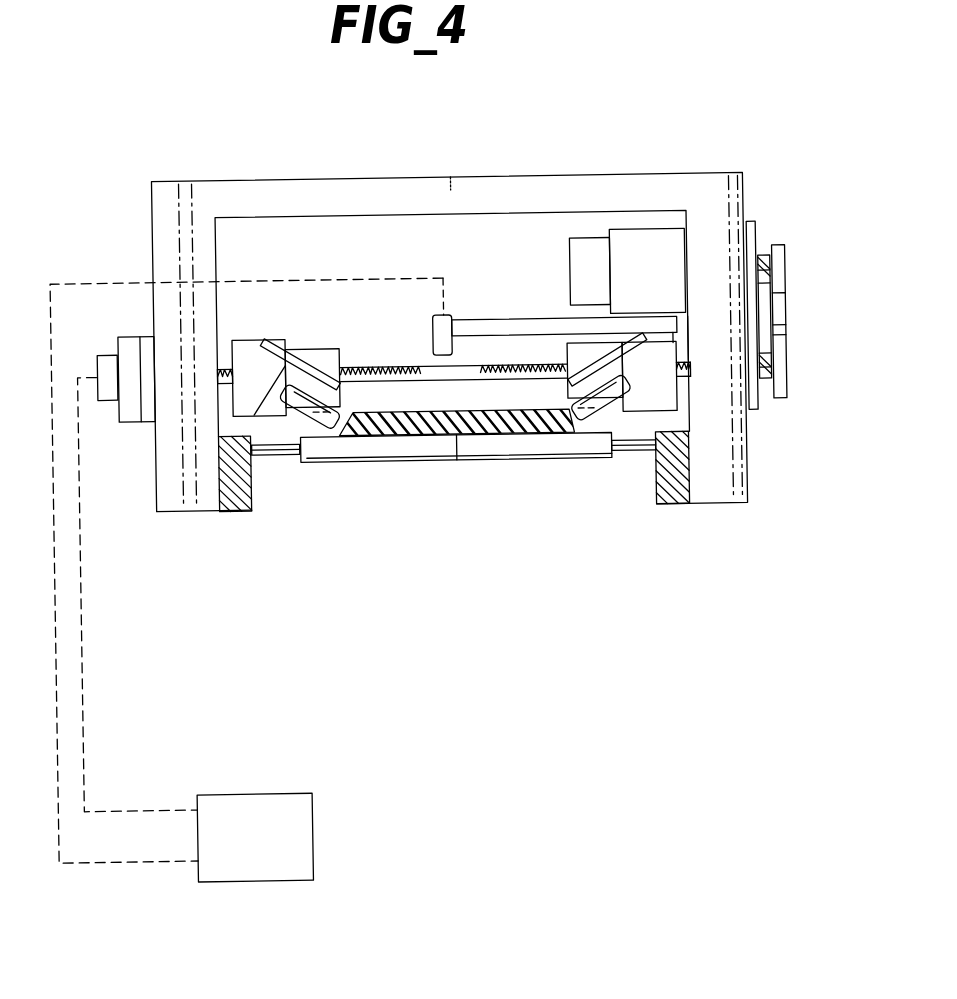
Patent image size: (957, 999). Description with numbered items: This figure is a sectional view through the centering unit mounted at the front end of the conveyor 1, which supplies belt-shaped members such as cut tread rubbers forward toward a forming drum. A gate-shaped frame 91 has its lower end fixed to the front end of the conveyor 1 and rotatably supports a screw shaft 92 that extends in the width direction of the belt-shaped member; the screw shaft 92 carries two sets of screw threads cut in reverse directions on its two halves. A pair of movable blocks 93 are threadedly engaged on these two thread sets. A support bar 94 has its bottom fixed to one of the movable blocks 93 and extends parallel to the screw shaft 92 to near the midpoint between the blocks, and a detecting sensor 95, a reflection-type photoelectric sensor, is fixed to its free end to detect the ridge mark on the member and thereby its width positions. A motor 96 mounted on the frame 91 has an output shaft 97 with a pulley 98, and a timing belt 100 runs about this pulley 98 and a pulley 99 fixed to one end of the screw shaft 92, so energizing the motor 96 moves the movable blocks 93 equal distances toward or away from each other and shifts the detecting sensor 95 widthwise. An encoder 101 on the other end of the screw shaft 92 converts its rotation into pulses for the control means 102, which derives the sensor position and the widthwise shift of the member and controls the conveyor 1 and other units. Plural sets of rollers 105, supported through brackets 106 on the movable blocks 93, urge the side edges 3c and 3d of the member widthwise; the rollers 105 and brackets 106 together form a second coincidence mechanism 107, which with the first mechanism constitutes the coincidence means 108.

The conveyor 1 is at (262, 511).
The side edge 3c is at (565, 441).
The side edge 3d is at (362, 442).
The gate-shaped frame 91 is at (617, 177).
The screw shaft 92 is at (395, 366).
The movable blocks 93 is at (252, 338).
The support bar 94 is at (512, 320).
The detecting sensor 95 is at (433, 320).
The motor 96 is at (655, 232).
The output shaft 97 is at (770, 260).
The pulley 98 is at (787, 298).
The pulley 99 is at (793, 341).
The timing belt 100 is at (787, 330).
The encoder 101 is at (108, 354).
The control means 102 is at (265, 792).
The rollers 105 is at (272, 456).
The brackets 106 is at (300, 346).
The second coincidence mechanism 107 is at (598, 484).
The coincidence means 108 is at (656, 511).